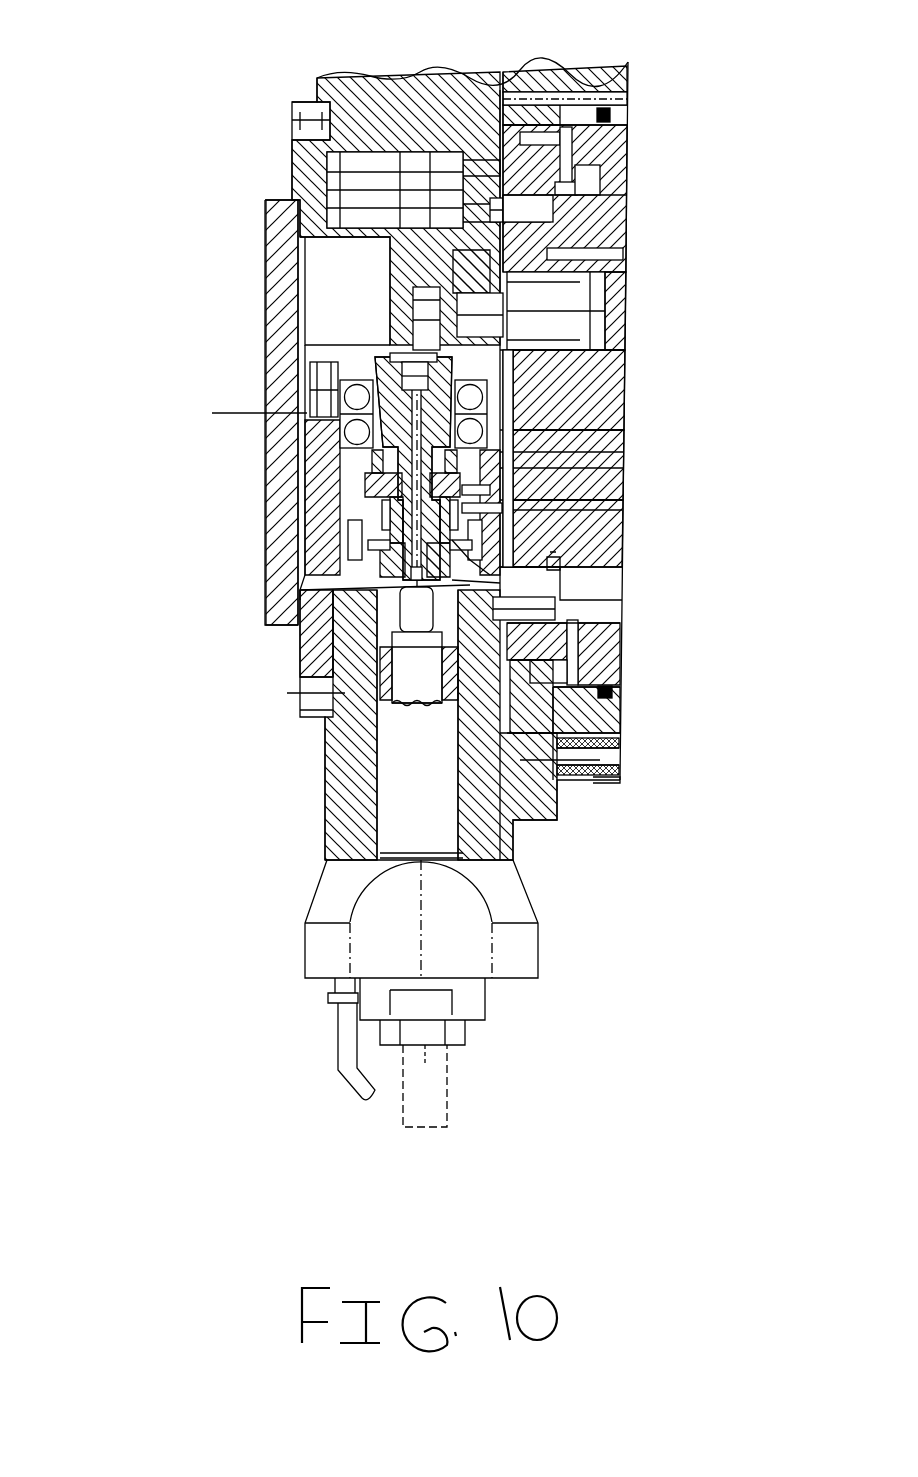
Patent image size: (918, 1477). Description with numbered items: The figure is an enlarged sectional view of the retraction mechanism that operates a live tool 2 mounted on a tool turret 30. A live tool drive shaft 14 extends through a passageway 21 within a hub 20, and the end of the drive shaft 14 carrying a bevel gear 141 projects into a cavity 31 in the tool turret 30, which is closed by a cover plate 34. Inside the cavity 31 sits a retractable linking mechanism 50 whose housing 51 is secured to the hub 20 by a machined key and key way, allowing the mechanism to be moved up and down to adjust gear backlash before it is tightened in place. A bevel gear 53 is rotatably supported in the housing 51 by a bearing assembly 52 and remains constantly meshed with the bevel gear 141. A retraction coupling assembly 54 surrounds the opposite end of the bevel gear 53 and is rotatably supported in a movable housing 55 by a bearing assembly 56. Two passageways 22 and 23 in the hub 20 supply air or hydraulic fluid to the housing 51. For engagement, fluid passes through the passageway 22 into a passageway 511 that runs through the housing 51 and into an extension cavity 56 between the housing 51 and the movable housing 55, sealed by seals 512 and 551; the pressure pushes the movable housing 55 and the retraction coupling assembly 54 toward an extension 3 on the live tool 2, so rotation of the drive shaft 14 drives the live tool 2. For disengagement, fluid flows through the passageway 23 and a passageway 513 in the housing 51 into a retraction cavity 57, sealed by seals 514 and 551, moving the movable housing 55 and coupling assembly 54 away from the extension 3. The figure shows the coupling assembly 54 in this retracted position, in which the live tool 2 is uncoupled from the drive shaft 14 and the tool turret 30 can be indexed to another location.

The live tool 2 is at (274, 956).
The extension 3 is at (410, 615).
The live tool drive shaft 14 is at (608, 300).
The hub 20 is at (603, 376).
The passageway 21 is at (620, 350).
The passageway 22 is at (612, 457).
The passageway 23 is at (612, 528).
The tool turret 30 is at (358, 95).
The cavity 31 is at (300, 290).
The cover plate 34 is at (292, 240).
The retractable linking mechanism 50 is at (317, 463).
The housing 51 is at (317, 495).
The bearing assembly 52 is at (352, 428).
The bevel gear 53 is at (380, 373).
The retraction coupling assembly 54 is at (395, 548).
The movable housing 55 is at (370, 520).
The bearing assembly / extension cavity 56 is at (385, 562).
The retraction cavity 57 is at (560, 566).
The bevel gear 141 is at (468, 275).
The passageway 511 is at (472, 495).
The seal 512 is at (475, 490).
The passageway 513 is at (473, 513).
The seal 514 is at (477, 537).
The seal 551 is at (478, 510).